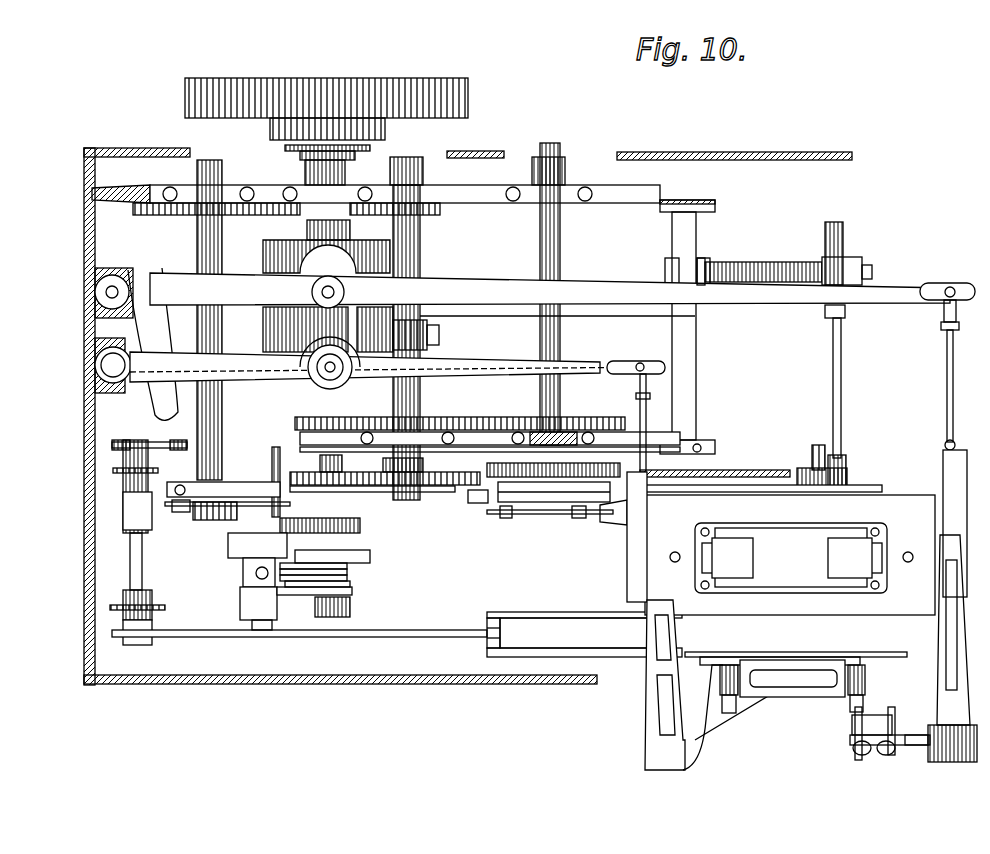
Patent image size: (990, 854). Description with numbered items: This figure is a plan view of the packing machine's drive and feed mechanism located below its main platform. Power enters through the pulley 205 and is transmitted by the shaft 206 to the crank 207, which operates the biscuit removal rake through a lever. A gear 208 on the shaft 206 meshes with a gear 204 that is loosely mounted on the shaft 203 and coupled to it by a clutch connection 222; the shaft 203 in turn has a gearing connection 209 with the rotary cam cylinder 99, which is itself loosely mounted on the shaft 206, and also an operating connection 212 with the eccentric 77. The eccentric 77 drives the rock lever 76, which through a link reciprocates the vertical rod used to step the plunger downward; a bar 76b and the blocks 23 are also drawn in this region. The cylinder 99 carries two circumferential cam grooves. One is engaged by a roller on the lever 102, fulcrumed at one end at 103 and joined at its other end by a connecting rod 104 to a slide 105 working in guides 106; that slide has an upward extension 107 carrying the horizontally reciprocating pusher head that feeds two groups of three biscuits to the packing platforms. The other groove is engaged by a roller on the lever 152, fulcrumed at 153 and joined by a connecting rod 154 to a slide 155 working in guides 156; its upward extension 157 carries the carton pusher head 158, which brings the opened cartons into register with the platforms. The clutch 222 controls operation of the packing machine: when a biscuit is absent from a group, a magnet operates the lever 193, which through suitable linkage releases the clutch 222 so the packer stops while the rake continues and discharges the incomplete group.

The pulley 205 is at (185, 97).
The rotary cylinder 99 is at (265, 256).
The fulcrum 103 is at (118, 285).
The fulcrum 153 is at (95, 365).
The lever 102 is at (740, 304).
The lever 152 is at (586, 360).
The shaft 203 is at (430, 328).
The operating connection 212 is at (752, 262).
The eccentric 77 is at (846, 258).
The connecting rod 104 is at (947, 358).
The rock lever 76 is at (843, 468).
The bar 76b is at (776, 475).
The slide 105 is at (948, 470).
The guides 106 is at (945, 505).
The die blocks 23 is at (828, 556).
The gearing connection 209 is at (440, 418).
The connecting rod 154 is at (640, 408).
The clutch connection 222 is at (423, 466).
The gear 204 is at (442, 490).
The gear 208 is at (274, 472).
The lever 193 is at (275, 510).
The shaft 206 is at (345, 516).
The crank 207 is at (350, 582).
The guides 156 is at (628, 575).
The slide 155 is at (648, 685).
The upward extension 157 is at (702, 733).
The carton pusher head 158 is at (775, 652).
The upward extension 107 is at (950, 752).